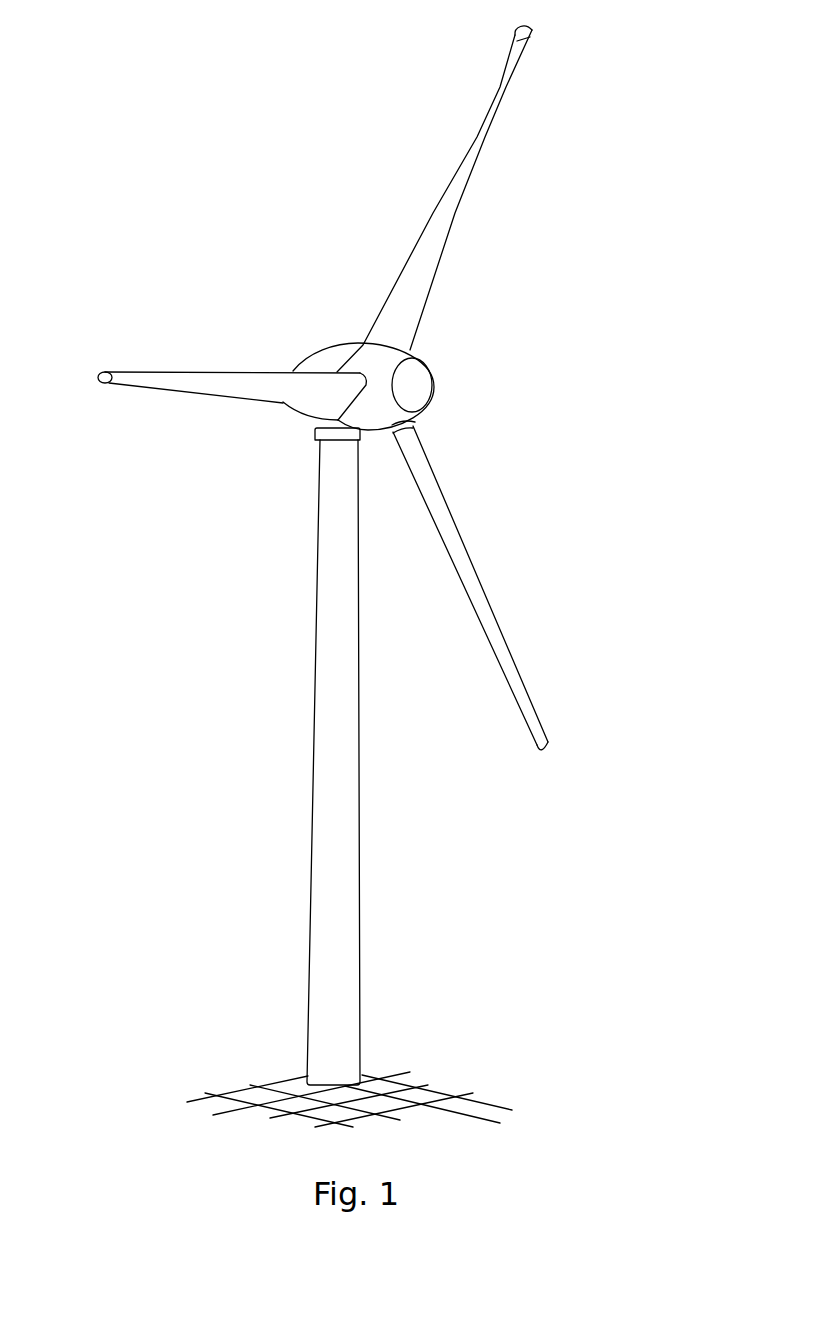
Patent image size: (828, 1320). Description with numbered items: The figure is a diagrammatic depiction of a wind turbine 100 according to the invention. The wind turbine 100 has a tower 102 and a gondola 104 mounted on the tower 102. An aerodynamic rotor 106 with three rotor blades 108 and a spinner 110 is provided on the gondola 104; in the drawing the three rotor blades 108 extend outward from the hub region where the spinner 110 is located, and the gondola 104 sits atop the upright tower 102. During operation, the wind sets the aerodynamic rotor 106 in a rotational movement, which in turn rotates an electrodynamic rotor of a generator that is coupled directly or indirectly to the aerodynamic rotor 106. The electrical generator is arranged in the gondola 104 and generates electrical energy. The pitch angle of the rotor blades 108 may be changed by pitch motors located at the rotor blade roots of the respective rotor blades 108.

The wind turbine 100 is at (268, 517).
The tower 102 is at (342, 863).
The gondola 104 is at (332, 360).
The aerodynamic rotor 106 is at (505, 305).
The rotor blades 108 is at (475, 147).
The spinner 110 is at (418, 386).